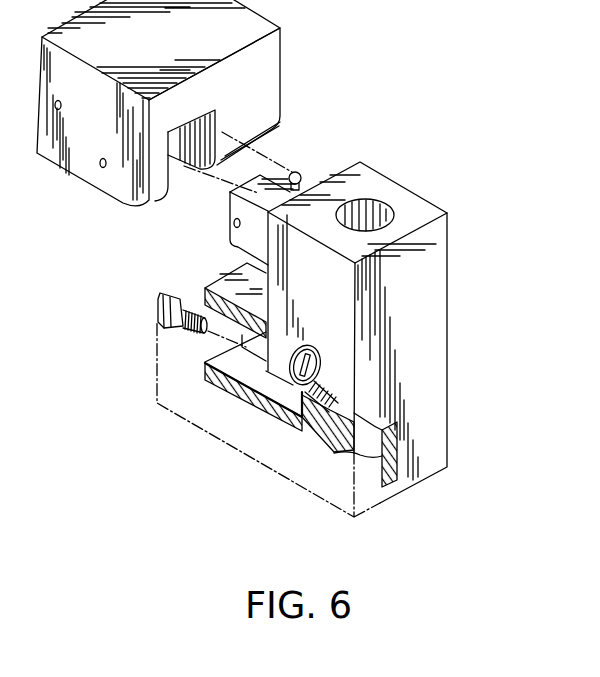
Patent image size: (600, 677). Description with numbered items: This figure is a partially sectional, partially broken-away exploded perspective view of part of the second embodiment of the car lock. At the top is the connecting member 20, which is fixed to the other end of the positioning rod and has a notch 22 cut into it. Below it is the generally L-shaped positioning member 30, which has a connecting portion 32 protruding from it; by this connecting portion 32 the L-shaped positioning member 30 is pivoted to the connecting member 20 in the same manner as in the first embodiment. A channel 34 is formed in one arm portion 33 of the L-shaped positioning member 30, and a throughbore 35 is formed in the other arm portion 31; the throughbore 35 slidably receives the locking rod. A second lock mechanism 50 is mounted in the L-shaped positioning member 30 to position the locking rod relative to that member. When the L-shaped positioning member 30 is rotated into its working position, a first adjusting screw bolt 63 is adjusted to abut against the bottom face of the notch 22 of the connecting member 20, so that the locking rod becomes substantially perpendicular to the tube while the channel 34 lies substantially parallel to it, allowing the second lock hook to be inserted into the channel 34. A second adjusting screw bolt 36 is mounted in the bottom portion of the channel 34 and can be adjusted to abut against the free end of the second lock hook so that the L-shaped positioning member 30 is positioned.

The connecting member 20 is at (341, 24).
The notch 22 is at (203, 123).
The L-shaped positioning member 30 is at (501, 318).
The other arm portion 31 is at (475, 178).
The connecting portion 32 is at (275, 178).
The one arm portion 33 is at (218, 275).
The channel 34 is at (253, 373).
The throughbore 35 is at (370, 211).
The second adjusting screw bolt 36 is at (160, 298).
The second lock mechanism 50 is at (311, 385).
The first adjusting screw bolt 63 is at (348, 138).